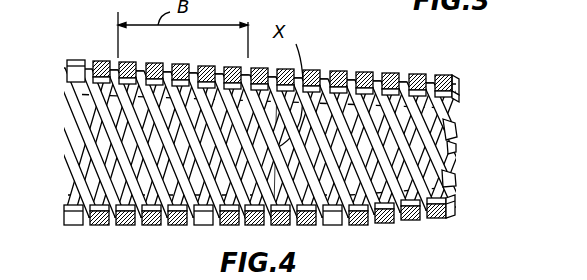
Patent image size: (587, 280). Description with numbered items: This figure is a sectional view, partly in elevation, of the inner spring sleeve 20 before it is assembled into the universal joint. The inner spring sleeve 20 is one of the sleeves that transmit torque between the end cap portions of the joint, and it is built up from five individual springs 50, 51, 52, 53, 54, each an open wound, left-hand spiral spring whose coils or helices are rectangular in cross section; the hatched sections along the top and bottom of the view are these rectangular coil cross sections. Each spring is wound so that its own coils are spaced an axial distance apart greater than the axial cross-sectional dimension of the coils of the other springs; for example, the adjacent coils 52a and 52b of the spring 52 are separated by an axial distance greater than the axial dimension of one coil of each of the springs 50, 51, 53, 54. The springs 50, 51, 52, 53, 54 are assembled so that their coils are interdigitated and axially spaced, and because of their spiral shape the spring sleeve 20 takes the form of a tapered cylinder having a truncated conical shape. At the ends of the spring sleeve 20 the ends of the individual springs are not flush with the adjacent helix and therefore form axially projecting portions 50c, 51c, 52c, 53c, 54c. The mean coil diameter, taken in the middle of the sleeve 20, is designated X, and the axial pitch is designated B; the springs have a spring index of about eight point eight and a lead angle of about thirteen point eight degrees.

The inner spring sleeve 20 is at (305, 43).
The spring 50 is at (449, 76).
The spring 51 is at (417, 74).
The spring 52 is at (390, 73).
The spring 53 is at (363, 72).
The spring 54 is at (331, 71).
The axially projecting portion 50c is at (455, 108).
The axially projecting portion 51c is at (455, 147).
The axially projecting portion 52c is at (455, 180).
The axially projecting portion 53c is at (457, 206).
The axially projecting portion 54c is at (459, 128).
The coil 52a is at (323, 226).
The coil 52b is at (193, 226).